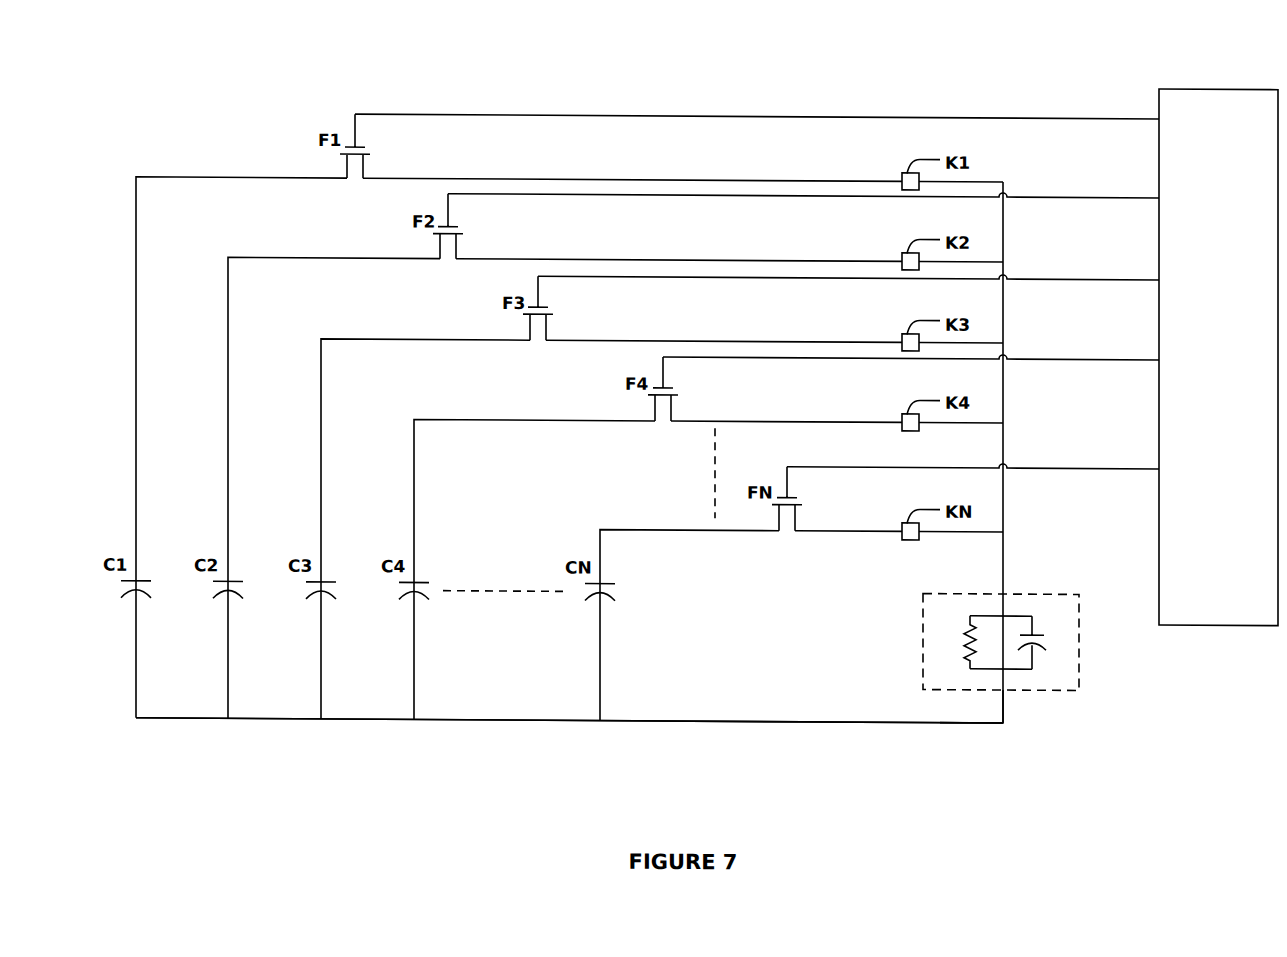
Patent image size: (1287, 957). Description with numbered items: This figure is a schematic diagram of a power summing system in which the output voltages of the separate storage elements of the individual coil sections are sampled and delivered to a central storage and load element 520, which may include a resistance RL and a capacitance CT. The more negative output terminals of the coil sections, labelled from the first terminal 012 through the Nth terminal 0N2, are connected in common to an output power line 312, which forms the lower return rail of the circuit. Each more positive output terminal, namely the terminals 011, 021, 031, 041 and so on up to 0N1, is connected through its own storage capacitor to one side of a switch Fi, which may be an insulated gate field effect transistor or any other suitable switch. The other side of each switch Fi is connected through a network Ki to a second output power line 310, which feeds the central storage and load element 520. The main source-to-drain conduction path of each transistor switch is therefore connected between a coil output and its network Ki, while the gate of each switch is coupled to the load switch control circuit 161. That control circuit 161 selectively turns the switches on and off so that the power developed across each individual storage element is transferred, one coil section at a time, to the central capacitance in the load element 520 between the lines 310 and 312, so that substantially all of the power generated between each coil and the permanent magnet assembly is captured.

The load switch control circuit 161 is at (1220, 82).
The more positive output terminal of the first coil section 011 is at (136, 476).
The more positive output terminal of the second coil section 021 is at (228, 476).
The more positive output terminal of the third coil section 031 is at (321, 476).
The more positive output terminal of the fourth coil section 041 is at (414, 476).
The more positive output terminal of the Nth coil section 0N1 is at (660, 524).
The more negative output terminal of the first coil section 012 is at (460, 718).
The more negative output terminal of the Nth coil section 0N2 is at (569, 720).
The output power line 310 is at (1003, 556).
The central storage and load element 520 is at (1030, 588).
The output power line 312 is at (970, 715).